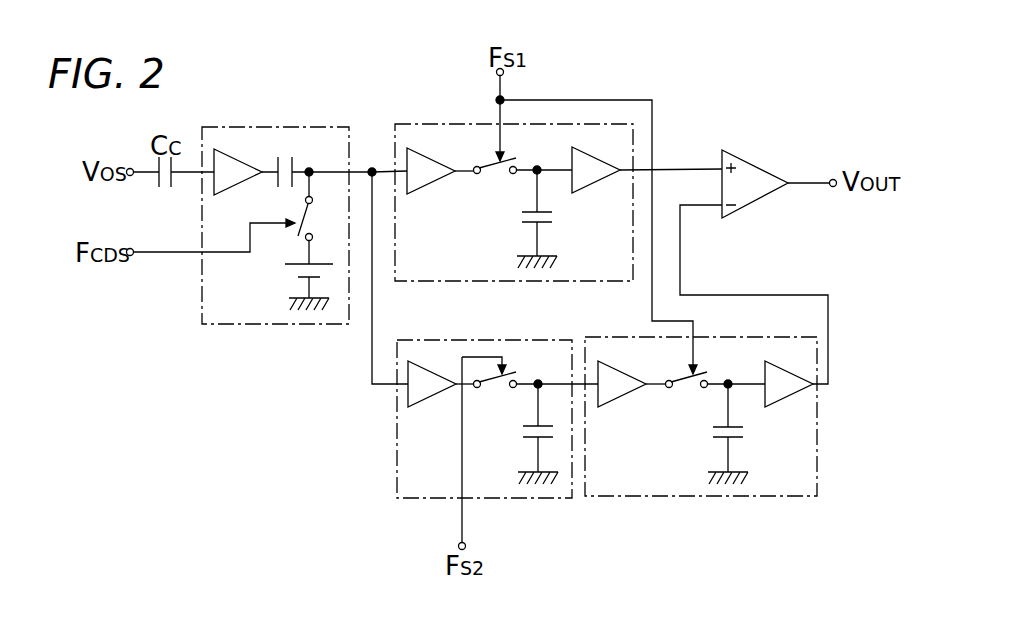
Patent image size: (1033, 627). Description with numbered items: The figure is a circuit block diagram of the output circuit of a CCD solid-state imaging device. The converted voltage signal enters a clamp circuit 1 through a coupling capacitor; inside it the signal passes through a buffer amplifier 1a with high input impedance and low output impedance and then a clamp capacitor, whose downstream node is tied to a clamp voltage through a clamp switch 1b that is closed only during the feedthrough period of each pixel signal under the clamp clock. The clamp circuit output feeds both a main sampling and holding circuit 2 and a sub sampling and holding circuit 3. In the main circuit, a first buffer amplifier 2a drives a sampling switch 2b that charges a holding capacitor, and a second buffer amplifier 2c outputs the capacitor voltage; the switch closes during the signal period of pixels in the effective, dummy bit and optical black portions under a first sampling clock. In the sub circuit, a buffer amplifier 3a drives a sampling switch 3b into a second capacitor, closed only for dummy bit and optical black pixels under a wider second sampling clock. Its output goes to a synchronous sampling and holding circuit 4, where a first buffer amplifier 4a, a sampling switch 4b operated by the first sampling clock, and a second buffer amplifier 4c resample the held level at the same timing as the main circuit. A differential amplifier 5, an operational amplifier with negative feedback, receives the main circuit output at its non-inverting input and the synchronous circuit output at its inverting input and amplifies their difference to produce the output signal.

The clamp circuit 1 is at (270, 127).
The buffer amplifier 1a is at (232, 186).
The clamp switch 1b is at (324, 207).
The main sampling and holding circuit 2 is at (452, 124).
The first buffer amplifier 2a is at (422, 192).
The sampling switch 2b is at (495, 175).
The second buffer amplifier 2c is at (582, 160).
The sub sampling and holding circuit 3 is at (397, 462).
The buffer amplifier 3a is at (415, 407).
The sampling switch 3b is at (494, 388).
The synchronous sampling and holding circuit 4 is at (817, 455).
The first buffer amplifier 4a is at (600, 405).
The sampling switch 4b is at (687, 388).
The second buffer amplifier 4c is at (778, 374).
The differential amplifier 5 is at (762, 178).